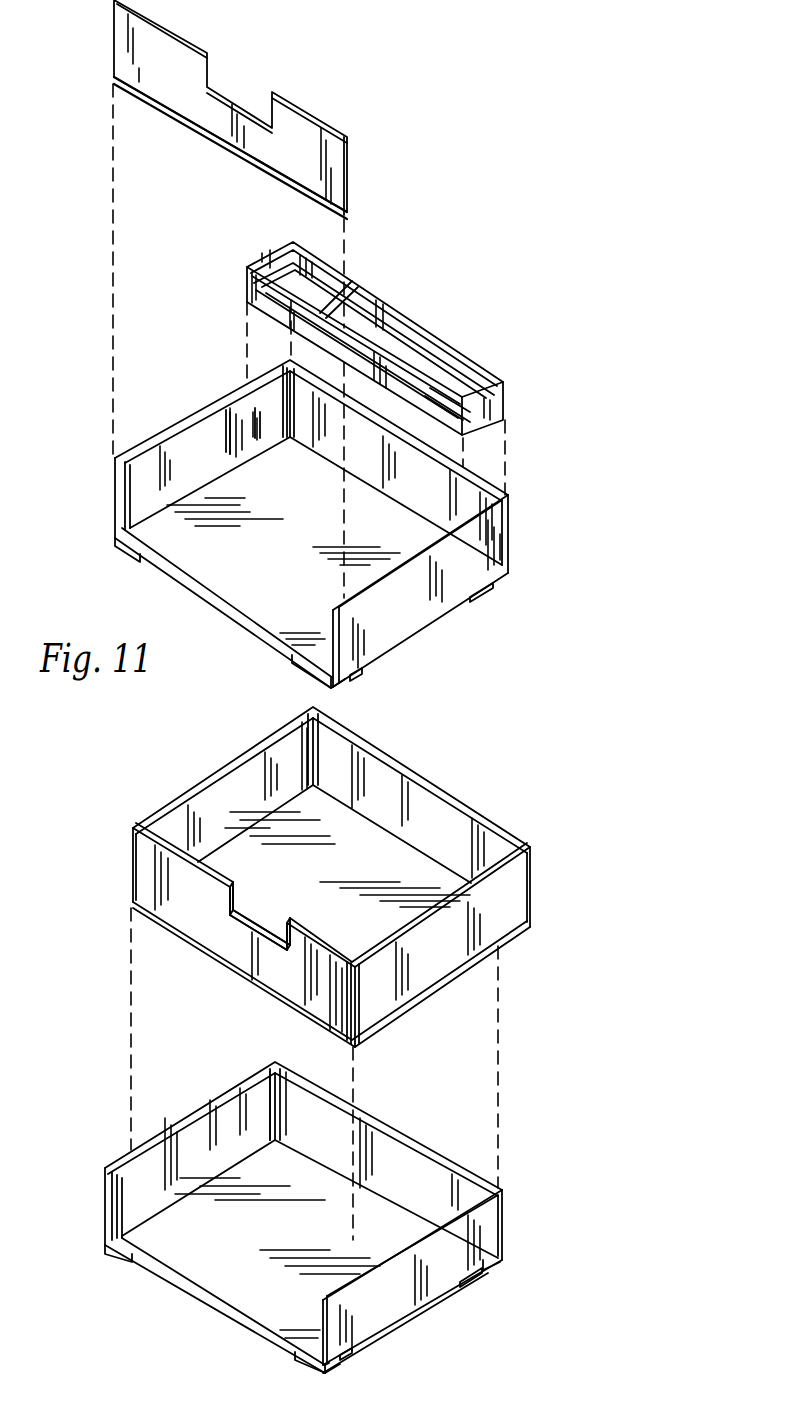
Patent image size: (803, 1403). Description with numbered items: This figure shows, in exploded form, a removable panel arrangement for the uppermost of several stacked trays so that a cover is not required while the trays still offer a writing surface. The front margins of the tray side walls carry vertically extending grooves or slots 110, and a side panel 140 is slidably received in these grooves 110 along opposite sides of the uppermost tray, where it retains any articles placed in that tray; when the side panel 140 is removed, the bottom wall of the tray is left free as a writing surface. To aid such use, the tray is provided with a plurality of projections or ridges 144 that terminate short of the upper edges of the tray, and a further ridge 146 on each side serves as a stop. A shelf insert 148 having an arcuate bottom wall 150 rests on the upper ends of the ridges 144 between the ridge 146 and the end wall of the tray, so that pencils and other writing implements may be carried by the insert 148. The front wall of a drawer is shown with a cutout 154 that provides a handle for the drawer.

The grooves or slots 110 is at (115, 526).
The side panel 140 is at (340, 160).
The projections or ridges 144 is at (257, 432).
The further ridge 146 is at (225, 427).
The shelf insert 148 is at (425, 332).
The arcuate bottom wall 150 is at (442, 383).
The cutouts 154 is at (267, 931).